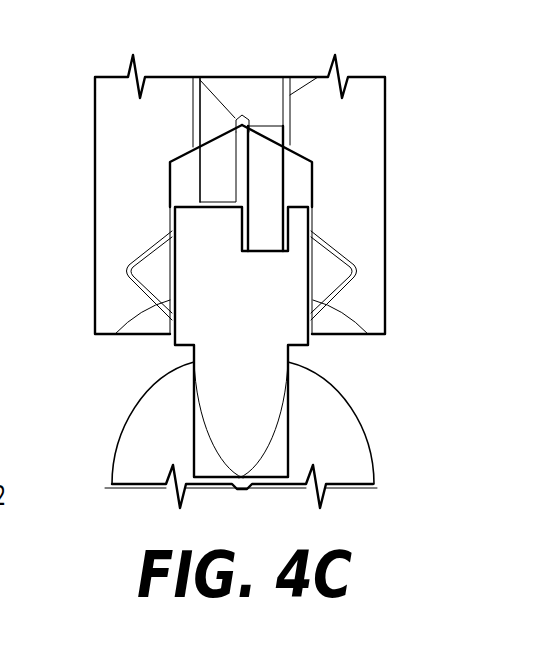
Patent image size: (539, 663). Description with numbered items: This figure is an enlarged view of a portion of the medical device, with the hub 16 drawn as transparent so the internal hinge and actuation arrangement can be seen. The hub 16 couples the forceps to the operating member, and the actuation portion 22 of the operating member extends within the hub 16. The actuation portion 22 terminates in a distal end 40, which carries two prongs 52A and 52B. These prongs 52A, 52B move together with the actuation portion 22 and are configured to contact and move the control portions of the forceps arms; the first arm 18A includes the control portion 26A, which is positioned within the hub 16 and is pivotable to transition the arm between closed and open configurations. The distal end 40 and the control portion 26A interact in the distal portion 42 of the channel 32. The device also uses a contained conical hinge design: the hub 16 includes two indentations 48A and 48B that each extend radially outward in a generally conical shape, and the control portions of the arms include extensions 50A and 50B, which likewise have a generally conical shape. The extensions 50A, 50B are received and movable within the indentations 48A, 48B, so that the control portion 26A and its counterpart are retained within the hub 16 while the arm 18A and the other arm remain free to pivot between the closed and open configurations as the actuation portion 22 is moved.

The hub 16 is at (385, 188).
The actuation portion 22 is at (270, 92).
The channel 32 is at (195, 125).
The distal end 40 is at (321, 131).
The prong 52A is at (266, 177).
The prong 52B is at (215, 163).
The distal portion 42 is at (168, 198).
The control portion 26A is at (270, 370).
The extension 50A is at (345, 292).
The extension 50B is at (137, 262).
The indentation 48A is at (345, 250).
The indentation 48B is at (133, 292).
The first arm 18A is at (343, 420).